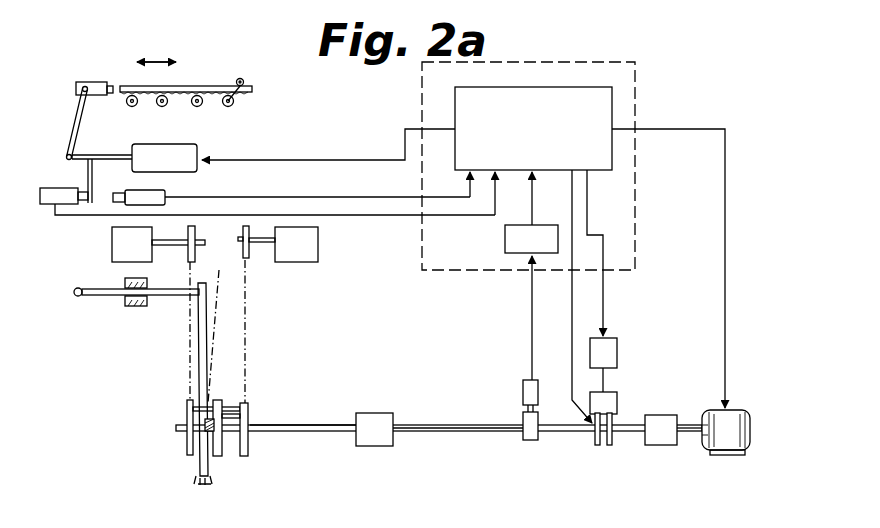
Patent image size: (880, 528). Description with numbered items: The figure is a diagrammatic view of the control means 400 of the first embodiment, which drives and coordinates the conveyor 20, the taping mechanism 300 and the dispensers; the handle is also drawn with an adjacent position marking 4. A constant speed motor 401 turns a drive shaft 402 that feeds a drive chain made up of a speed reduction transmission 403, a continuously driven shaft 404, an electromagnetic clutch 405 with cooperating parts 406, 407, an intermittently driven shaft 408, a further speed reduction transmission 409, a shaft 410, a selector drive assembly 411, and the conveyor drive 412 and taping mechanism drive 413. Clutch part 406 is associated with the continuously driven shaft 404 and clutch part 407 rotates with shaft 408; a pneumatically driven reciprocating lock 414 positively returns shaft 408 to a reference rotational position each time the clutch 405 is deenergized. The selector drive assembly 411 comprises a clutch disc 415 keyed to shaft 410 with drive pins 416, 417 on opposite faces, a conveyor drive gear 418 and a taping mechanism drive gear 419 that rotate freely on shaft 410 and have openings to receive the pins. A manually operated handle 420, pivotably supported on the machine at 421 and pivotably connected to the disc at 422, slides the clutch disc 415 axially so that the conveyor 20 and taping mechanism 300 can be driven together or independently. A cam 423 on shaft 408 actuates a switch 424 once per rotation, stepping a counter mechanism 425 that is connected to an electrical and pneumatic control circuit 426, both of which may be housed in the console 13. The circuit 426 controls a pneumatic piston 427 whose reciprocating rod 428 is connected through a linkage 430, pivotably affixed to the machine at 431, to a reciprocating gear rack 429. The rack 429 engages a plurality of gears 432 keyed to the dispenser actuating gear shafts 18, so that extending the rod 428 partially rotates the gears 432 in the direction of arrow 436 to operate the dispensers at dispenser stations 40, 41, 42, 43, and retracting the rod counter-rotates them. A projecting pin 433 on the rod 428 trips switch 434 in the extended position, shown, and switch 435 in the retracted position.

The position 4 is at (125, 302).
The console 13 is at (597, 62).
The dispenser actuating gear shafts 18 is at (158, 80).
The conveyor 20 is at (158, 244).
The dispenser station 40 is at (225, 112).
The dispenser station 41 is at (194, 112).
The dispenser station 42 is at (160, 112).
The dispenser station 43 is at (129, 112).
The taping mechanism 300 is at (290, 253).
The control means 400 is at (642, 72).
The constant speed motor 401 is at (738, 433).
The drive shaft 402 is at (690, 433).
The speed reduction transmission 403 is at (658, 418).
The continuously driven shaft 404 is at (633, 428).
The electromagnetic clutch 405 is at (605, 452).
The clutch part 406 is at (613, 447).
The clutch part 407 is at (597, 447).
The intermittently driven shaft 408 is at (435, 432).
The speed reduction transmission 409 is at (393, 397).
The shaft 410 is at (300, 432).
The selector drive assembly 411 is at (177, 459).
The conveyor drive 412 is at (196, 257).
The taping mechanism drive 413 is at (248, 281).
The reciprocating lock 414 is at (616, 352).
The clutch disc 415 is at (220, 452).
The drive pin 416 is at (210, 398).
The drive pin 417 is at (230, 405).
The conveyor drive gear 418 is at (187, 410).
The taping mechanism drive gear 419 is at (250, 414).
The manually operated handle 420 is at (101, 289).
The pivot 421 is at (200, 480).
The pivot connection 422 is at (207, 426).
The cam 423 is at (521, 421).
The switch 424 is at (521, 389).
The counter mechanism 425 is at (505, 243).
The electrical and pneumatic control circuit 426 is at (566, 94).
The pneumatic piston 427 is at (164, 158).
The reciprocating rod 428 is at (121, 153).
The reciprocating gear rack 429 is at (98, 82).
The linkage 430 is at (76, 125).
The pivot 431 is at (80, 99).
The gears 432 is at (231, 104).
The projecting pin 433 is at (87, 173).
The switch 434 is at (46, 205).
The switch 435 is at (167, 193).
The arrow 436 is at (243, 96).